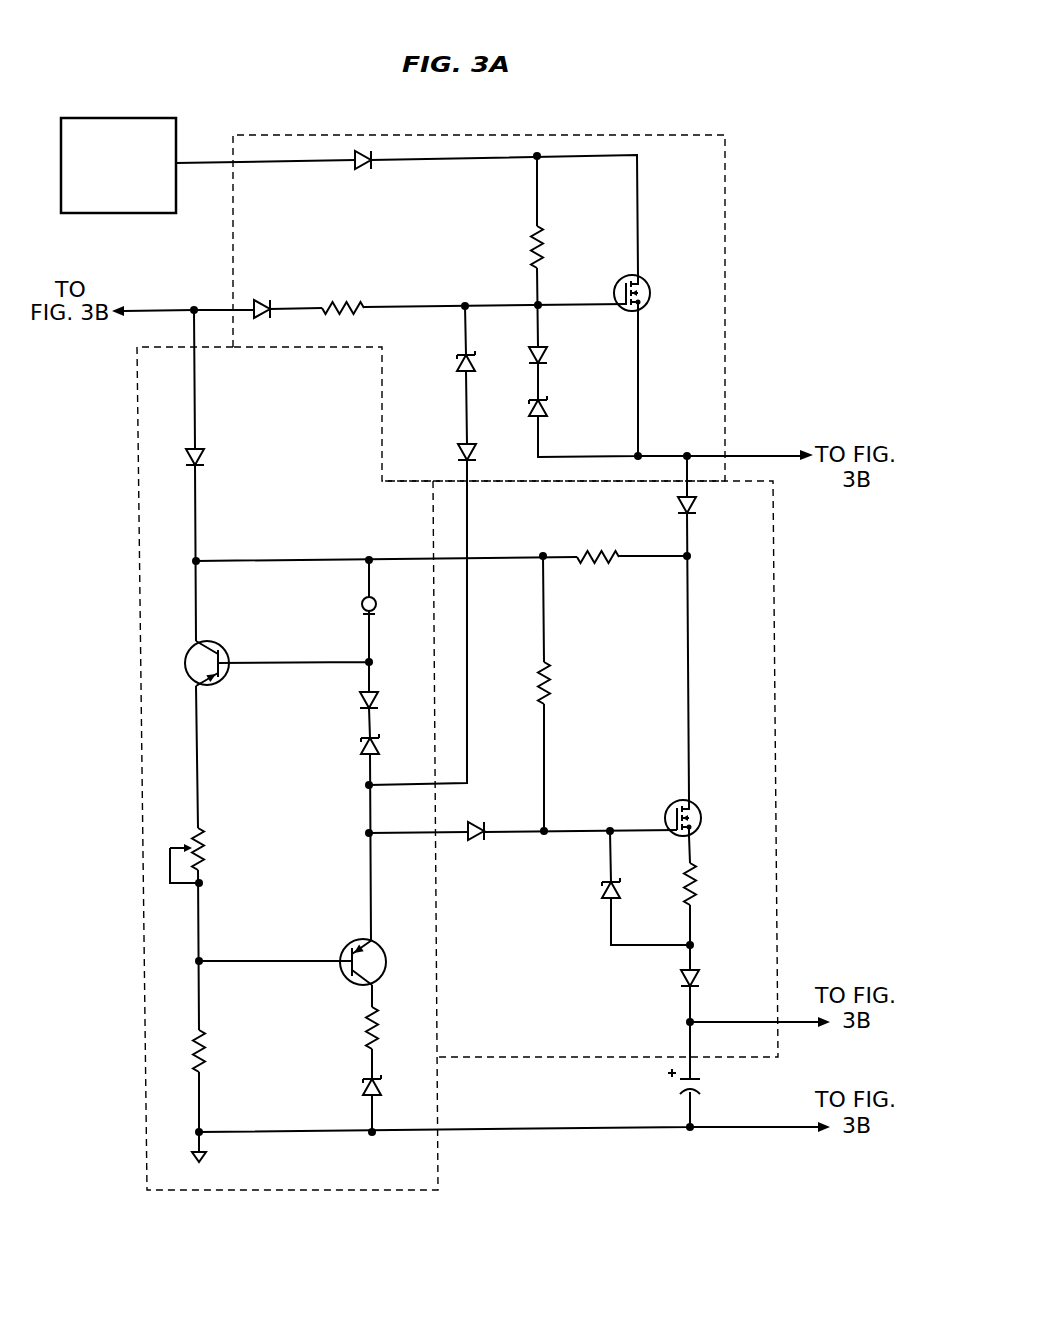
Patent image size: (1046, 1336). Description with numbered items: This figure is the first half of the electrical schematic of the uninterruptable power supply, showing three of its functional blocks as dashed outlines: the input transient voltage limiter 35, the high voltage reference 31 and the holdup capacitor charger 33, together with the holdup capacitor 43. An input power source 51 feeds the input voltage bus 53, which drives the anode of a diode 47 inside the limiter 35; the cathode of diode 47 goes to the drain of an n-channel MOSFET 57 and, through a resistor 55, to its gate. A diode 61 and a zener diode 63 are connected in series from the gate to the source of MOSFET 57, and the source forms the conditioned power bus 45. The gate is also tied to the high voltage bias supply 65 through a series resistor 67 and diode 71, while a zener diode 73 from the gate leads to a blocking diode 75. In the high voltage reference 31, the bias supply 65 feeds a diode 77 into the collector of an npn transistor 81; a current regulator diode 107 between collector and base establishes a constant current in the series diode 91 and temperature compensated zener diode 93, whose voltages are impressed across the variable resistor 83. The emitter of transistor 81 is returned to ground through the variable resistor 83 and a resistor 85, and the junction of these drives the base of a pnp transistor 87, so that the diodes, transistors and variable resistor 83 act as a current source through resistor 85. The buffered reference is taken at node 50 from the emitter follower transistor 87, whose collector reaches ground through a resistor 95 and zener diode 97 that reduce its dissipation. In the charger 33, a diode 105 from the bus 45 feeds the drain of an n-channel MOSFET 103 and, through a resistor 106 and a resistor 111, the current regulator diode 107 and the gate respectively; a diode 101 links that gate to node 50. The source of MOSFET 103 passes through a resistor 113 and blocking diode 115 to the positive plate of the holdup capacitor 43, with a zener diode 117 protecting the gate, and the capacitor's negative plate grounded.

The input power source 51 is at (96, 118).
The input voltage bus 53 is at (198, 161).
The diode 47 is at (362, 170).
The resistor 55 is at (544, 250).
The n-channel MOSFET 57 is at (651, 299).
The diode 61 is at (548, 352).
The zener diode 63 is at (548, 412).
The high voltage bias supply 65 is at (136, 310).
The resistor 67 is at (343, 304).
The diode 71 is at (263, 300).
The zener diode 73 is at (473, 366).
The blocking diode 75 is at (473, 455).
The diode 77 is at (205, 457).
The input transient voltage limiter 35 is at (728, 232).
The high voltage reference 31 is at (136, 383).
The holdup capacitor charger 33 is at (778, 536).
The conditioned power bus 45 is at (752, 455).
The diode 105 is at (699, 505).
The resistor 106 is at (590, 551).
The current regulator diode 107 is at (375, 603).
The npn transistor 81 is at (214, 643).
The diode 91 is at (379, 702).
The zener diode 93 is at (379, 748).
The variable resistor 83 is at (206, 851).
The node 50 is at (365, 833).
The diode 101 is at (476, 827).
The resistor 111 is at (551, 683).
The n-channel MOSFET 103 is at (702, 820).
The resistor 113 is at (699, 884).
The blocking diode 115 is at (699, 979).
The zener diode 117 is at (615, 890).
The pnp transistor 87 is at (386, 969).
The resistor 95 is at (382, 1040).
The zener diode 97 is at (383, 1090).
The resistor 85 is at (208, 1050).
The holdup capacitor 43 is at (700, 1086).